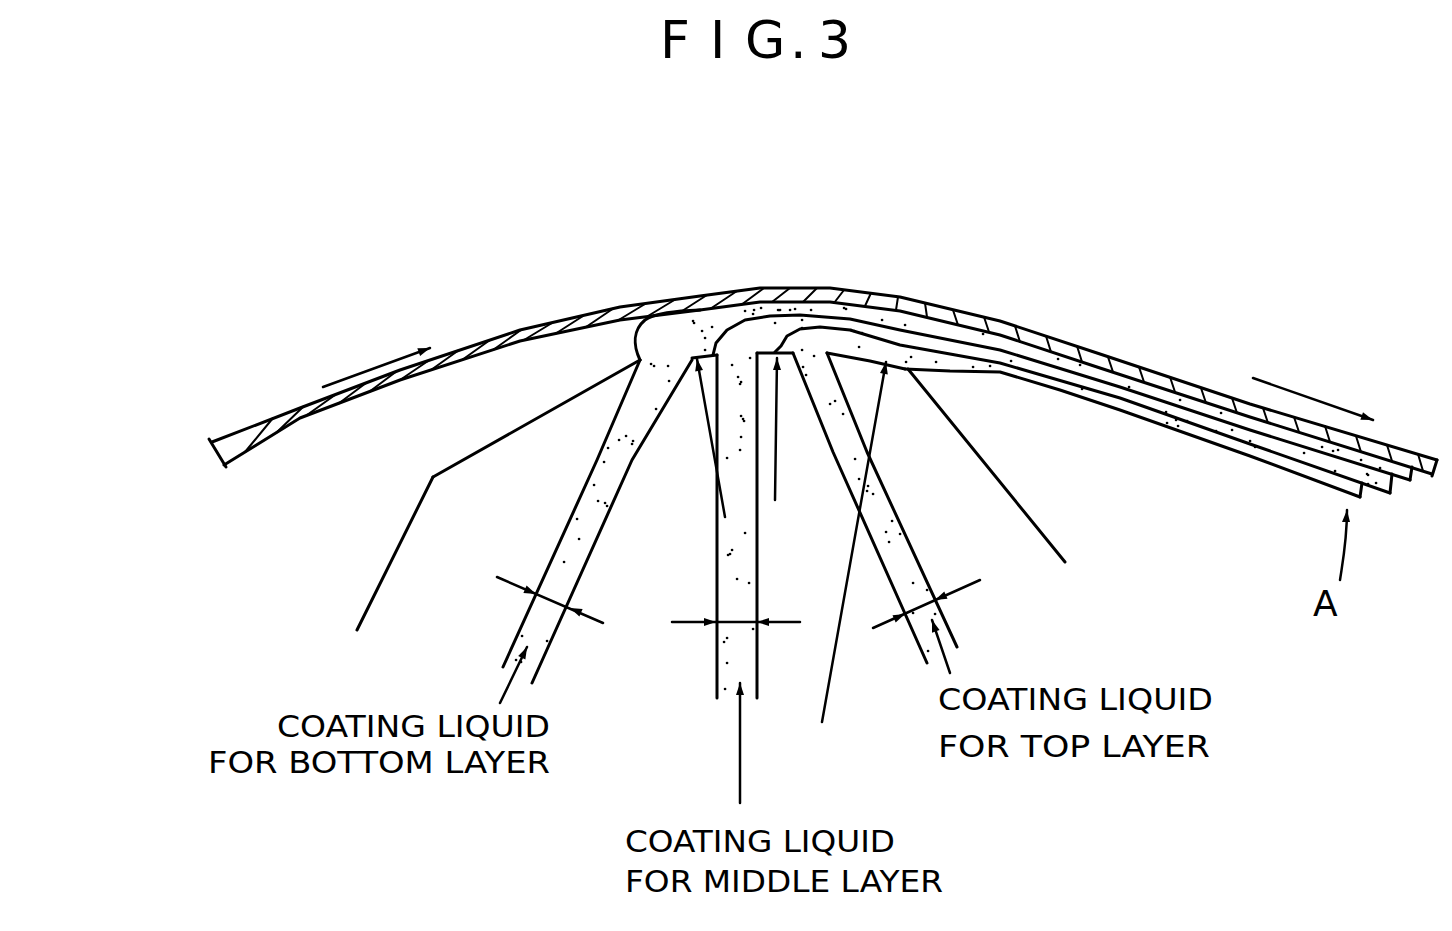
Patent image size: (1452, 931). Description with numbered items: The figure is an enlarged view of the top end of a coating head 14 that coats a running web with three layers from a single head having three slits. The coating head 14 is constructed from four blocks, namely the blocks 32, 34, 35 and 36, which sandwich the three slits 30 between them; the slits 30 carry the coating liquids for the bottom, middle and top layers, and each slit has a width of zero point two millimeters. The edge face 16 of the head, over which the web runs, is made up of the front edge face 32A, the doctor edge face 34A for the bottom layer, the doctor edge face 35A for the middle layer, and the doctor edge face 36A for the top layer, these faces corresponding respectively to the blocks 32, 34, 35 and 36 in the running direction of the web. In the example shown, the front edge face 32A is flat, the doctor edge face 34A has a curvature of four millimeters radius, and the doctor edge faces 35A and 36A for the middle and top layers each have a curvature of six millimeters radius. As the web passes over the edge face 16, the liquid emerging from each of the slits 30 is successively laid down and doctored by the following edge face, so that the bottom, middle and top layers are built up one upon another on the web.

The coating head 14 is at (1123, 552).
The edge face 16 is at (797, 325).
The slits 30 is at (592, 478).
The block 32 is at (410, 583).
The front edge face 32A is at (550, 407).
The block 34 is at (627, 673).
The doctor edge face for the bottom layer 34A is at (697, 357).
The block 35 is at (867, 670).
The doctor edge face for the middle layer 35A is at (773, 352).
The block 36 is at (990, 533).
The doctor edge face for the top layer 36A is at (873, 357).